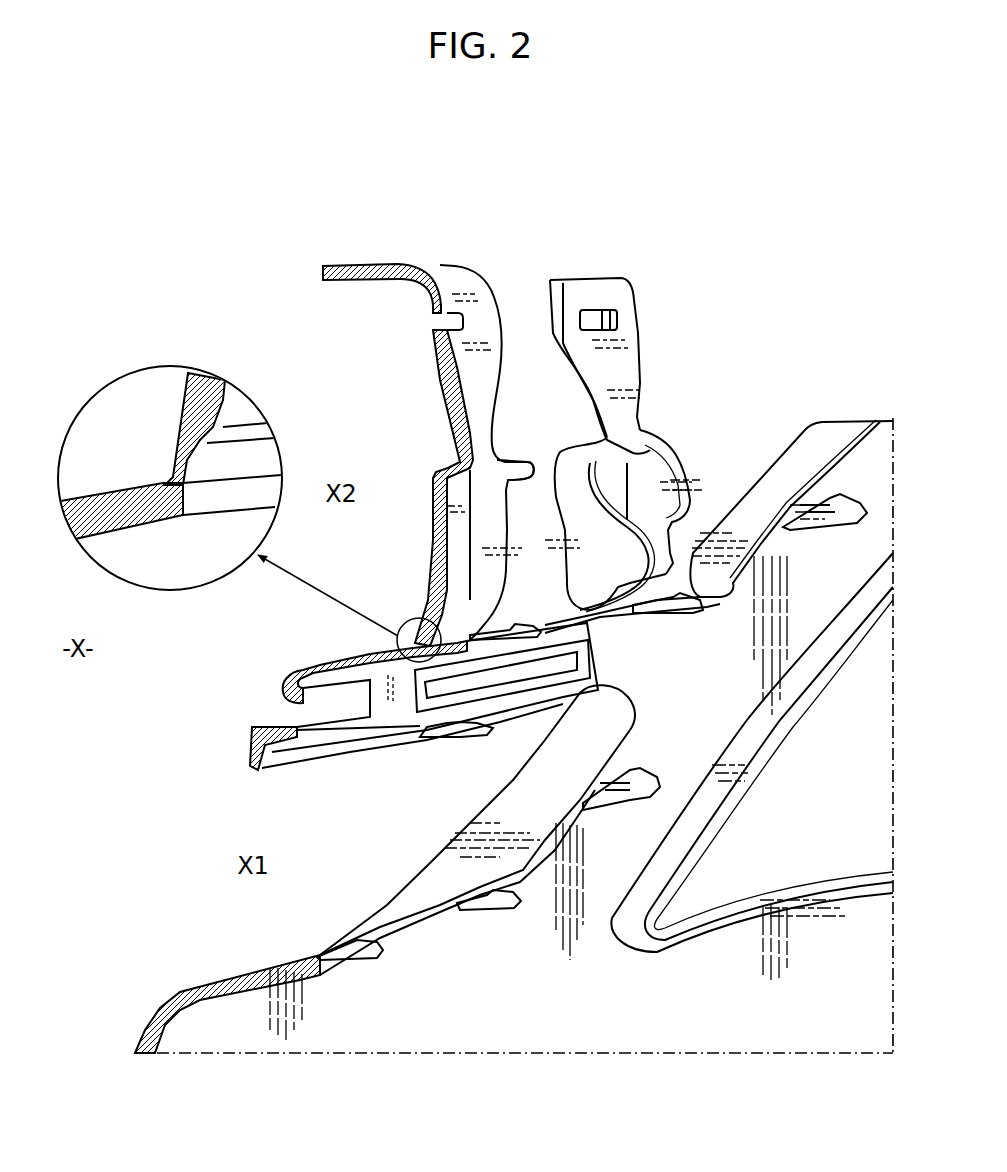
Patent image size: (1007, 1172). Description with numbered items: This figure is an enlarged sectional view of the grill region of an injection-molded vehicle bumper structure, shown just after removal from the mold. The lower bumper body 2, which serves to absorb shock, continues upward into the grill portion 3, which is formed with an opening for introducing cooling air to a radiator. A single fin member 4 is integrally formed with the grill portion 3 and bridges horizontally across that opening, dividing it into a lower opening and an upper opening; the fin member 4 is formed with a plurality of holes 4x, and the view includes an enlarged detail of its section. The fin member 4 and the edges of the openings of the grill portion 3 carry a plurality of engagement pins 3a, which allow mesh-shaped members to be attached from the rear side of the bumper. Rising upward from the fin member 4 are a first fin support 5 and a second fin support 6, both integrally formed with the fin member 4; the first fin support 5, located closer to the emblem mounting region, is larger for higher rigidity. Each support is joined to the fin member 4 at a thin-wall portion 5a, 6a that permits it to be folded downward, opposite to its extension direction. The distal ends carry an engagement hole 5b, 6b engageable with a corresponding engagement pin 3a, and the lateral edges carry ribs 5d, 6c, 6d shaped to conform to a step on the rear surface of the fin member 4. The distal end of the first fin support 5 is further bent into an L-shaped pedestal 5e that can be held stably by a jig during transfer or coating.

The bumper body 2 is at (128, 990).
The grill portion 3 is at (232, 253).
The engagement pin 3a is at (522, 632).
The fin member 4 is at (272, 665).
The hole 4x is at (290, 717).
The first fin support 5 is at (428, 431).
The thin-wall portion 5a is at (173, 460).
The engagement hole 5b is at (447, 325).
The rib 5d is at (505, 462).
The pedestal 5e is at (414, 268).
The second fin support 6 is at (610, 422).
The thin-wall portion 6a is at (583, 605).
The engagement hole 6b is at (612, 320).
The rib 6c is at (577, 460).
The rib 6d is at (670, 447).